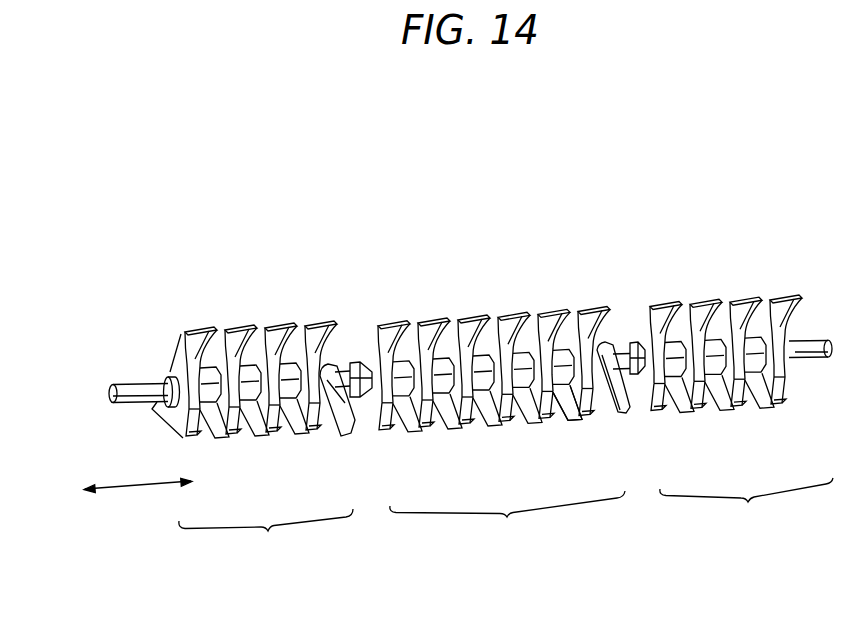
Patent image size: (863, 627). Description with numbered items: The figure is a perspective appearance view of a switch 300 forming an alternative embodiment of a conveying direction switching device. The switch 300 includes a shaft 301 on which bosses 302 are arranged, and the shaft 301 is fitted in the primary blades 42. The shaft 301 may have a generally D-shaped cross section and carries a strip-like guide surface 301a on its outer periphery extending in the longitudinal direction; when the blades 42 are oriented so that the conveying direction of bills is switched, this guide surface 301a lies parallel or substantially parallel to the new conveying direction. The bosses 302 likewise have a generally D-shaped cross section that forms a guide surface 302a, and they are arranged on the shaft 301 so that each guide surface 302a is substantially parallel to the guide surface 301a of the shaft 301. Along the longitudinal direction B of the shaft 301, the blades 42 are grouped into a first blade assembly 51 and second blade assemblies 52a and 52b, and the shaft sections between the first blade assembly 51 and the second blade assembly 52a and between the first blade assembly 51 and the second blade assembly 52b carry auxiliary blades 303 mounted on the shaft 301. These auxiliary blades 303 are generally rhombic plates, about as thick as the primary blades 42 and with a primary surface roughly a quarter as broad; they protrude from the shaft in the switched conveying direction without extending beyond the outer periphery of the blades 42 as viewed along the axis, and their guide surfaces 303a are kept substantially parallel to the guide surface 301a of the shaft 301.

The switch 300 is at (296, 193).
The shaft 301 is at (134, 384).
The guide surface 301a is at (633, 378).
The bosses 302 is at (313, 408).
The guide surface 302a is at (560, 396).
The auxiliary blades 303 is at (345, 350).
The guide surface 303a is at (332, 434).
The blades 42 is at (320, 328).
The first blade assembly 51 is at (507, 524).
The second blade assembly 52a is at (266, 539).
The second blade assembly 52b is at (746, 514).
The longitudinal direction B is at (114, 480).